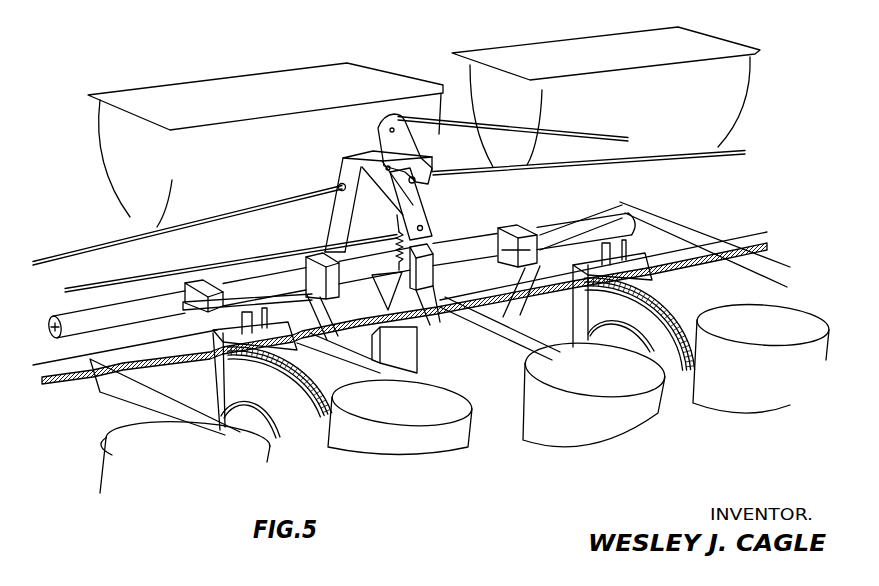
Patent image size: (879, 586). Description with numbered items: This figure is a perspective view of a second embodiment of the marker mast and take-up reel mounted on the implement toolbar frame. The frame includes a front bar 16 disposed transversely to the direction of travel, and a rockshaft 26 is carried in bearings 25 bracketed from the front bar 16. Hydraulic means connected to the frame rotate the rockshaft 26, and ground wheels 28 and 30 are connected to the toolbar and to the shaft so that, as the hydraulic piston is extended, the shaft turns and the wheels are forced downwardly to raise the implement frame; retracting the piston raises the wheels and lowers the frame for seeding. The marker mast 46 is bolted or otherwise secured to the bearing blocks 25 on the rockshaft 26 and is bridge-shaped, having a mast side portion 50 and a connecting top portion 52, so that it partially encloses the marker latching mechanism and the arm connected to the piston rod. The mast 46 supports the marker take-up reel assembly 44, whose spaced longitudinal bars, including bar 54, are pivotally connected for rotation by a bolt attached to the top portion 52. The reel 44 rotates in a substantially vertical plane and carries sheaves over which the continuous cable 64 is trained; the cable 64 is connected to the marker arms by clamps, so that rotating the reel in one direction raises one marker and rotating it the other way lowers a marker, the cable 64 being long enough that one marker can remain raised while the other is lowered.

The front bar 16 is at (50, 384).
The bearings 25 is at (511, 230).
The rockshaft 26 is at (130, 300).
The ground wheel 28 is at (657, 285).
The ground wheel 30 is at (242, 377).
The marker take-up reel assembly 44 is at (412, 149).
The marker mast 46 is at (334, 157).
The mast side portion 50 is at (340, 173).
The connecting top portion 52 is at (360, 155).
The longitudinal bar 54 is at (417, 200).
The cable 64 is at (498, 124).